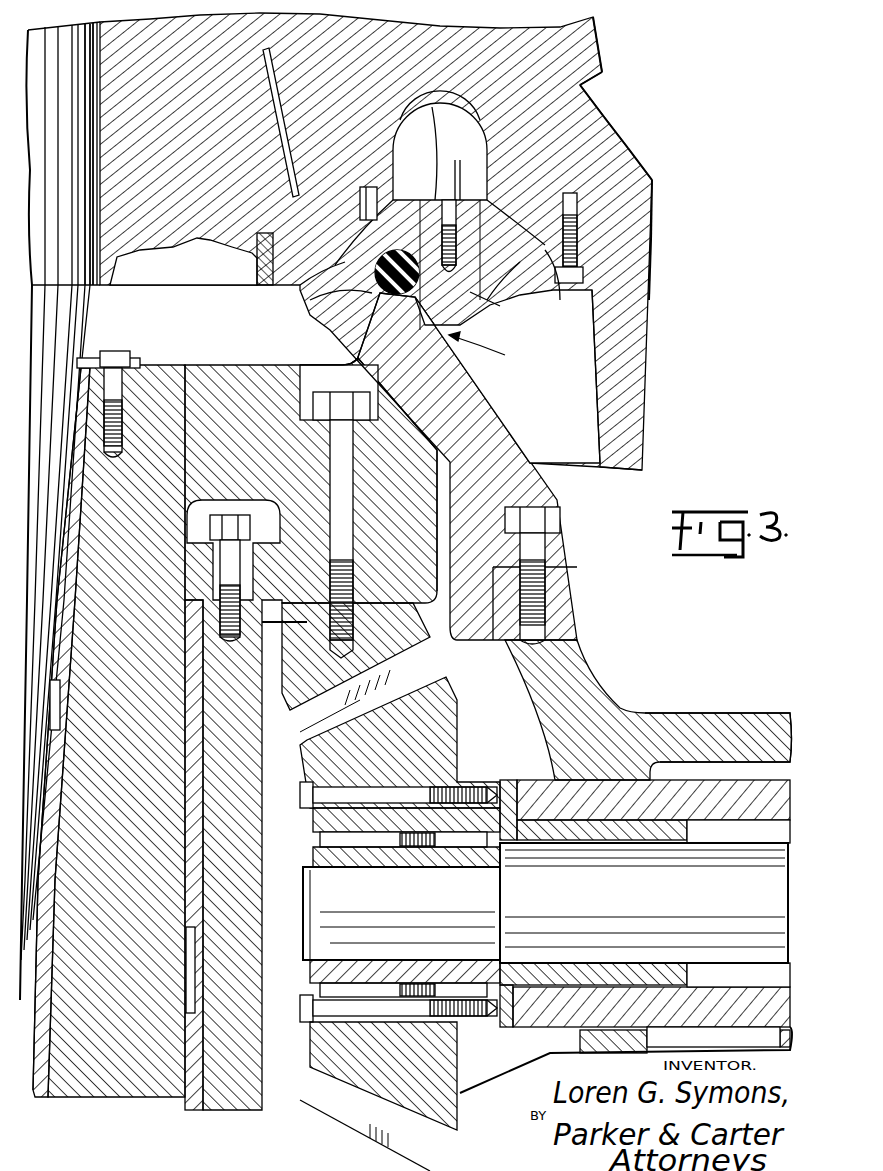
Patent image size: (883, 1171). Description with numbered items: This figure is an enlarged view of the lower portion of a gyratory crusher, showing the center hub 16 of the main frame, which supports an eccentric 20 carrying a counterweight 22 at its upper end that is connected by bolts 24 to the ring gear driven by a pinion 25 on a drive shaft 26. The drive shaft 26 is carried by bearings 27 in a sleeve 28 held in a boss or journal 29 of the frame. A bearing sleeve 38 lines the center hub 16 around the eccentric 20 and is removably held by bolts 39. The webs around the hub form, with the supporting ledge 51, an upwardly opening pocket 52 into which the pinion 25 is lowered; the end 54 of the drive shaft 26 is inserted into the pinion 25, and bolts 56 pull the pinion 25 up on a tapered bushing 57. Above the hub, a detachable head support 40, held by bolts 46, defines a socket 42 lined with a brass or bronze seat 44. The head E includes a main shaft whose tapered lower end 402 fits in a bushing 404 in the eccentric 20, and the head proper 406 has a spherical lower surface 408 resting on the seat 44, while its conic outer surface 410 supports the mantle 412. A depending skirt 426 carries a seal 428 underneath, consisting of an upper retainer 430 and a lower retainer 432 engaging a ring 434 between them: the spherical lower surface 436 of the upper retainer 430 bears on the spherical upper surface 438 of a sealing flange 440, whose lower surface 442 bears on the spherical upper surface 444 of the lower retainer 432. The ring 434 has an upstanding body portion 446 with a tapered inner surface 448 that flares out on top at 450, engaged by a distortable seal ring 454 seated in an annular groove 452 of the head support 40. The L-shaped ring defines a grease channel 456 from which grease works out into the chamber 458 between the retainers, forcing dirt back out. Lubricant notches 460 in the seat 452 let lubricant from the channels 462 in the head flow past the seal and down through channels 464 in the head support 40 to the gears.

The center hub 16 is at (247, 1100).
The eccentric 20 is at (70, 1082).
The counterweight 22 is at (440, 525).
The bolts 24 is at (342, 396).
The pinion 25 is at (362, 1128).
The drive shaft 26 is at (750, 863).
The bearings 27 is at (533, 827).
The sleeve 28 is at (683, 797).
The boss or journal 29 is at (773, 730).
The bearing sleeve 38 is at (193, 1112).
The bolts 39 is at (233, 524).
The head support 40 is at (465, 412).
The socket 42 is at (260, 288).
The seat or liner 44 is at (393, 150).
The bolts 46 is at (535, 556).
The supporting ledge 51 is at (560, 594).
The pocket 52 is at (528, 710).
The end of the drive shaft 54 is at (315, 920).
The bolts 56 is at (303, 806).
The tapered bushing or sleeve 57 is at (320, 840).
The tapered lower end 402 is at (80, 342).
The bushing 404 is at (20, 1015).
The head proper 406 is at (345, 62).
The spherical lower surface 408 is at (228, 258).
The conic outer surface 410 is at (605, 120).
The mantle 412 is at (605, 62).
The depending skirt 426 is at (640, 372).
The seal 428 is at (496, 347).
The upper retainer 430 is at (620, 147).
The lower retainer 432 is at (500, 300).
The ring 434 is at (555, 303).
The spherical lower surface 436 is at (632, 168).
The spherical upper surface 438 is at (592, 98).
The sealing flange 440 is at (585, 221).
The lower surface 442 is at (588, 247).
The spherical upper surface 444 is at (522, 310).
The upstanding body portion 446 is at (437, 195).
The tapered inner surface 448 is at (443, 140).
The flare 450 is at (445, 142).
The groove or seat 452 is at (306, 303).
The seal ring 454 is at (306, 335).
The grease channel 456 is at (442, 230).
The chamber 458 is at (646, 183).
The lubricant notches 460 is at (242, 318).
The lubricating channels 462 is at (276, 55).
The channels 464 is at (350, 358).
The head E is at (673, 200).